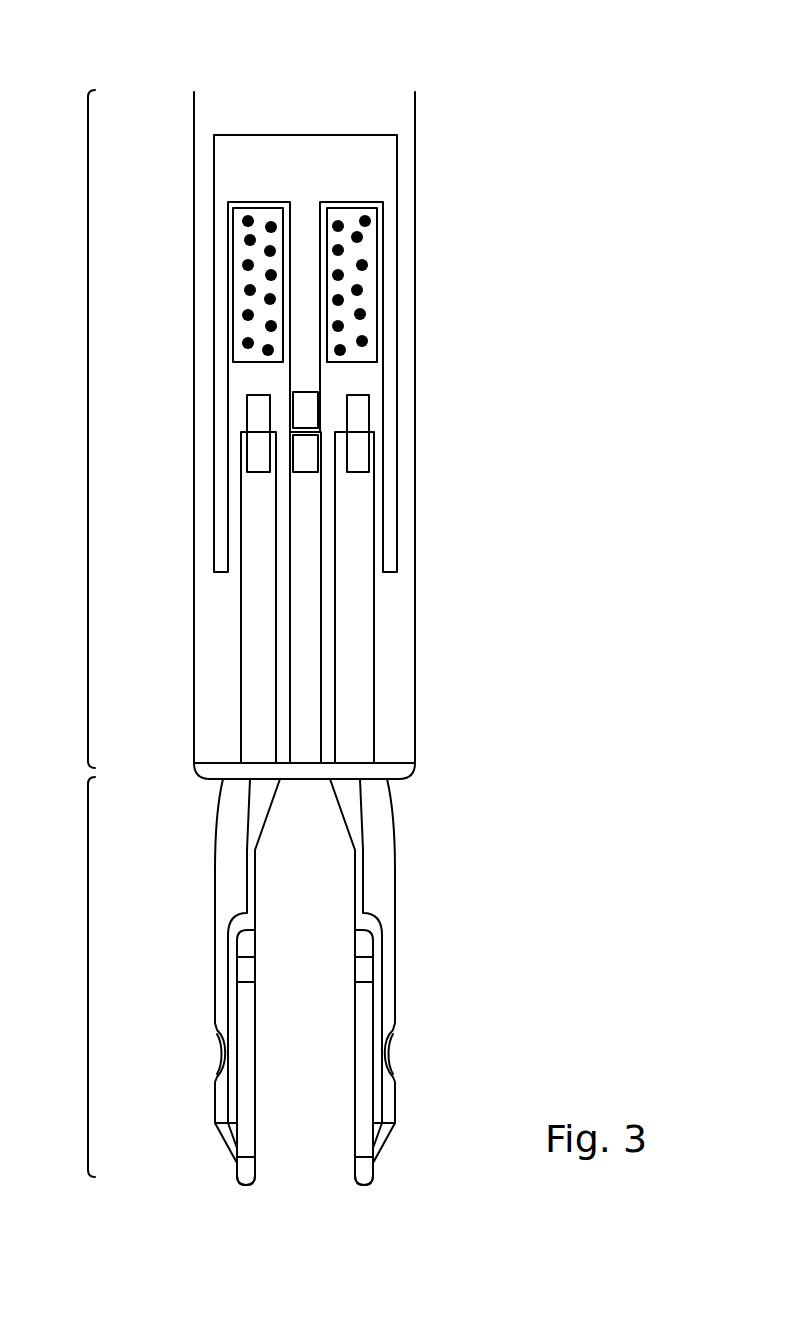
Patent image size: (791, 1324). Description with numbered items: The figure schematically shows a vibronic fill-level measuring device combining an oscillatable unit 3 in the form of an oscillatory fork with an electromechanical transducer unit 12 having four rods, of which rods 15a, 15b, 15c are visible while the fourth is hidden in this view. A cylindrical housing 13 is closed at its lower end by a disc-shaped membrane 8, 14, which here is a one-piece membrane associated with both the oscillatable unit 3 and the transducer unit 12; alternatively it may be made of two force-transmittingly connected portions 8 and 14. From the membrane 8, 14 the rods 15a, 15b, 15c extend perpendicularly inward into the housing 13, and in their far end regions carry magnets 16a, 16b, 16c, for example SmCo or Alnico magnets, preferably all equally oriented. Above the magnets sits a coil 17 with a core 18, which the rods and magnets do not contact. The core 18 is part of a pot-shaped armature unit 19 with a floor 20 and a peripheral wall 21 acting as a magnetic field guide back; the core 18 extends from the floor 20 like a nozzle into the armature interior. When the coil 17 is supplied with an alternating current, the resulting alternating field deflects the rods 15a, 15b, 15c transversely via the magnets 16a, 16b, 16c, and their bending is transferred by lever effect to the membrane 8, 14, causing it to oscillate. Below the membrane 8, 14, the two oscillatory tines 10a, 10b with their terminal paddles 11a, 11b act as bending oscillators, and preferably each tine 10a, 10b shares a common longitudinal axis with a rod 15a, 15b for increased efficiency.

The oscillatable unit 3 is at (76, 977).
The membrane 8 is at (369, 786).
The membrane 14 is at (418, 771).
The oscillatory tine 10a is at (240, 830).
The oscillatory tine 10b is at (387, 880).
The terminal paddle 11a is at (245, 1090).
The terminal paddle 11b is at (363, 1115).
The electromechanical transducer unit 12 is at (70, 429).
The housing 13 is at (415, 182).
The rod 15a is at (258, 612).
The rod 15b is at (300, 660).
The rod 15c is at (355, 720).
The magnet 16a is at (257, 472).
The magnet 16b is at (303, 472).
The magnet 16c is at (353, 398).
The coil 17 is at (404, 285).
The core 18 is at (310, 267).
The armature unit 19 is at (335, 93).
The floor 20 is at (298, 172).
The peripheral wall 21 is at (225, 258).